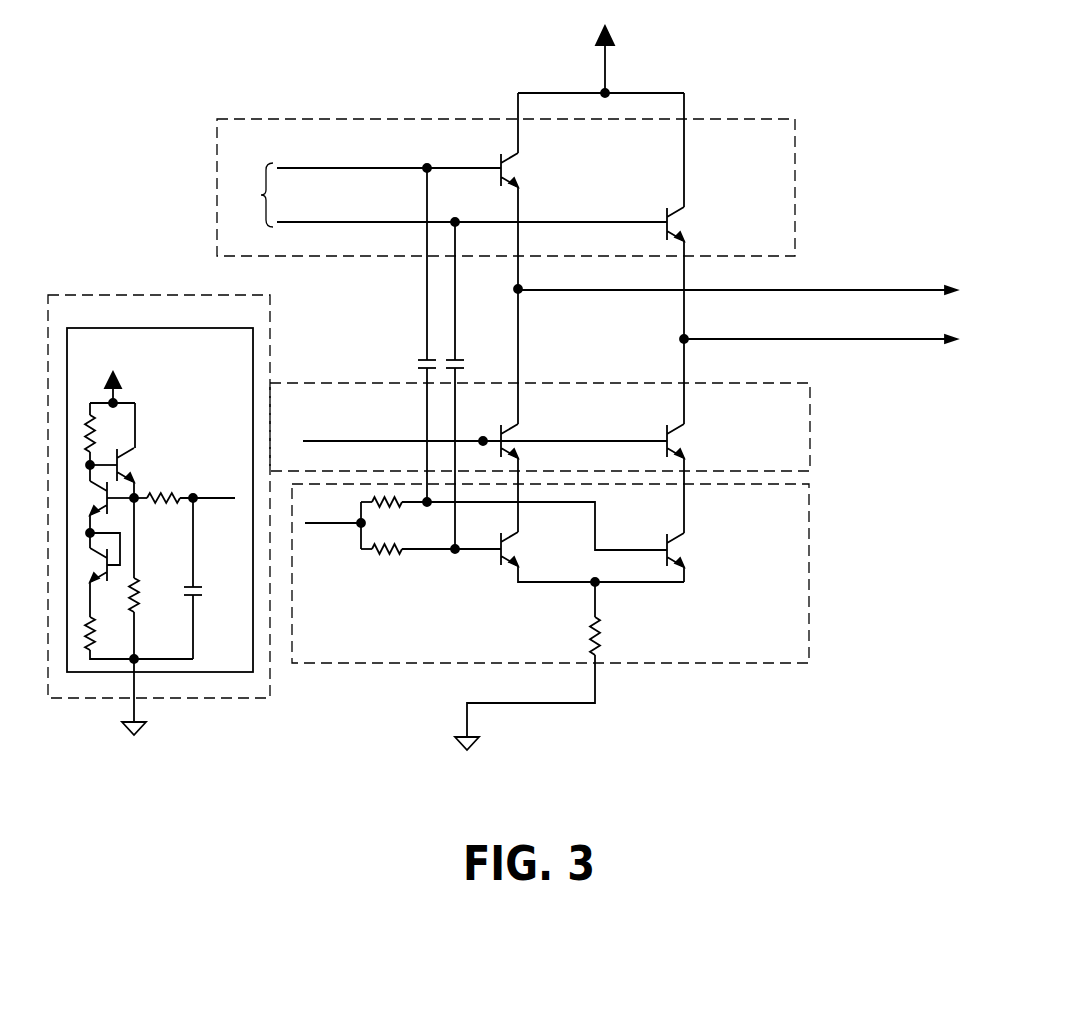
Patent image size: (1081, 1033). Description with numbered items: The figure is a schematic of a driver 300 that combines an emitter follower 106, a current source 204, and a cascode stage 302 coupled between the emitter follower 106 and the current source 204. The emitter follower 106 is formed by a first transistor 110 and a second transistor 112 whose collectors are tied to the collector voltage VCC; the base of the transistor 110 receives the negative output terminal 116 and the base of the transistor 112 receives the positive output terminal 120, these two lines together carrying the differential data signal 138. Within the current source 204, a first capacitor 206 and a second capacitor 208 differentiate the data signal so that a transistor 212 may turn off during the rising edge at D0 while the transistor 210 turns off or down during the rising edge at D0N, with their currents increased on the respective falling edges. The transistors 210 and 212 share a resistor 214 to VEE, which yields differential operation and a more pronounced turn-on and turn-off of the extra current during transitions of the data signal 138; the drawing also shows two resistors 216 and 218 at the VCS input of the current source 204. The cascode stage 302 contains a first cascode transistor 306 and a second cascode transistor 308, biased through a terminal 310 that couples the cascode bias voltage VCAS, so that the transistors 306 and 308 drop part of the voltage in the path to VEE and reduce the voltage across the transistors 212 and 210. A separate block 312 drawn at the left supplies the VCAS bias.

The emitter follower 106 is at (795, 163).
The first transistor 110 is at (520, 168).
The second transistor 112 is at (686, 222).
The first output terminal 116 is at (350, 167).
The second output terminal 120 is at (350, 221).
The data signal 138 is at (271, 184).
The first capacitor 206 is at (414, 356).
The second capacitor 208 is at (464, 356).
The current source 204 is at (810, 540).
The transistor 210 is at (685, 548).
The transistor 212 is at (510, 546).
The resistor 214 is at (601, 637).
The resistor 216 is at (386, 507).
The resistor 218 is at (386, 557).
The driver 300 is at (879, 698).
The cascode stage 302 is at (810, 420).
The first cascode transistor 306 is at (508, 436).
The second cascode transistor 308 is at (685, 438).
The terminal 310 is at (372, 440).
The bias generator circuit 312 is at (113, 328).